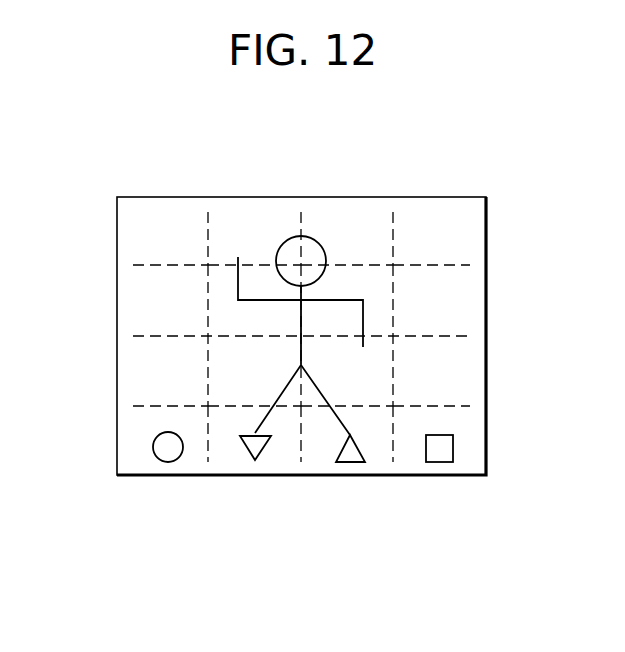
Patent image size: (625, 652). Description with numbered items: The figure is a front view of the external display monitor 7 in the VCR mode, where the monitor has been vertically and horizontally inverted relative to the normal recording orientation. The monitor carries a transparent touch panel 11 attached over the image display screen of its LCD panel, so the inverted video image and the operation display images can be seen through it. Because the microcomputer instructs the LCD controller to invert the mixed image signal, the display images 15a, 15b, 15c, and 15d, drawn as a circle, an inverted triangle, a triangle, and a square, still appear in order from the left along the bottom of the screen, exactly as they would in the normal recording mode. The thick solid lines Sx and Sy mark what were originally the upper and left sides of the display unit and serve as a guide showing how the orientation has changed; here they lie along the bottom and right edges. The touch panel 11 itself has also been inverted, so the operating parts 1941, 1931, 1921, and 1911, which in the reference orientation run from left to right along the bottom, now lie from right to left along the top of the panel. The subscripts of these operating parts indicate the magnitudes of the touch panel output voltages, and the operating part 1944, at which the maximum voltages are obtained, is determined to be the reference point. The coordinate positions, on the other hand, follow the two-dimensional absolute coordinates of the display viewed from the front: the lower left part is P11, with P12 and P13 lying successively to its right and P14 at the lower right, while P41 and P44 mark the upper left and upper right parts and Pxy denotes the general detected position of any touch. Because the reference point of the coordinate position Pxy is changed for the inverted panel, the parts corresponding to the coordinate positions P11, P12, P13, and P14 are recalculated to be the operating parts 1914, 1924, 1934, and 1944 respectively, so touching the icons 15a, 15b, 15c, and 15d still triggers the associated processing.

The external display monitor 7 is at (121, 180).
The touch panel 11 is at (452, 248).
The operating part 19₁₁ 1911 is at (167, 225).
The operating part 19₂₁ 1921 is at (245, 225).
The operating part 19₃₁ 1931 is at (350, 225).
The operating part 19₄₁ 1941 is at (428, 225).
The operating part 19₁₄ 1914 is at (135, 455).
The operating part 19₂₄ 1924 is at (278, 457).
The operating part 19₃₄ 1934 is at (378, 457).
The operating part 19₄₄ 1944 is at (468, 457).
The display image 15a is at (168, 462).
The display image 15b is at (248, 466).
The display image 15c is at (349, 462).
The display image 15d is at (435, 450).
The coordinate position P₄₁ P41 is at (138, 233).
The coordinate position P₄₄ P44 is at (452, 222).
The coordinate position P₁₁ P11 is at (138, 433).
The coordinate position P₁₄ P14 is at (460, 432).
The coordinate position P₁₂ P12 is at (223, 457).
The coordinate position P₁₃ P13 is at (318, 457).
The coordinate position P_xy Pxy is at (117, 313).
The solid line S_x Sx is at (443, 477).
The solid line S_y Sy is at (487, 369).